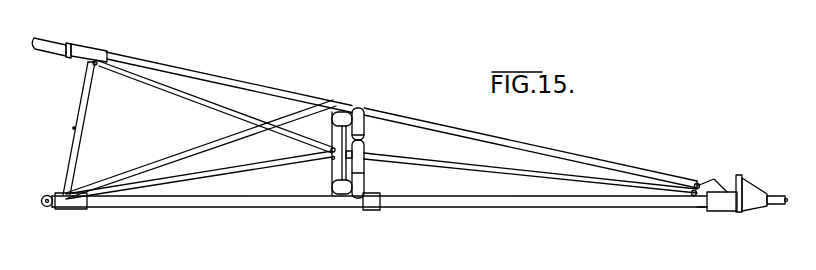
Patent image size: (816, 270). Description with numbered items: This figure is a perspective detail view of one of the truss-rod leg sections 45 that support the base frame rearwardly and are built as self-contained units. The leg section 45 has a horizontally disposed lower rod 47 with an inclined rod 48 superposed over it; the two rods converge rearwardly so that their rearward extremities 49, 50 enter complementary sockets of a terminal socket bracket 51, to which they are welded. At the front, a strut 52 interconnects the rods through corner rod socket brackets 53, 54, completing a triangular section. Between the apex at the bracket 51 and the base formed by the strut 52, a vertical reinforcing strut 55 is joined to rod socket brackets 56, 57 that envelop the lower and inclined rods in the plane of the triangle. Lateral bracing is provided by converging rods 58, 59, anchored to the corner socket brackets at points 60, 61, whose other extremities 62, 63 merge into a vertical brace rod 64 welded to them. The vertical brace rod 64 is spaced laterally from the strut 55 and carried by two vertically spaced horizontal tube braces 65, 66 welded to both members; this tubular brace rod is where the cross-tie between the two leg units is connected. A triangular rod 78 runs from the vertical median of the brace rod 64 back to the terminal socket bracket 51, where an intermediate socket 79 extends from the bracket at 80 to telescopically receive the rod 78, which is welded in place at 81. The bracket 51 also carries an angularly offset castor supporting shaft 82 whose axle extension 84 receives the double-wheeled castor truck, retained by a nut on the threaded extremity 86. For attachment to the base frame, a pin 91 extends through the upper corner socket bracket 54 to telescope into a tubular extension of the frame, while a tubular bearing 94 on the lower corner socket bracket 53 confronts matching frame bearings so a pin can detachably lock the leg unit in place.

The leg section 45 is at (258, 80).
The lower rod 47 is at (407, 198).
The inclined rod 48 is at (466, 128).
The rearward extremity of lower rod 49 is at (703, 209).
The rearward extremity of inclined rod 50 is at (712, 182).
The terminal socket bracket 51 is at (740, 177).
The strut 52 is at (82, 115).
The lower corner rod socket bracket 53 is at (76, 209).
The upper corner rod socket bracket 54 is at (82, 56).
The vertical reinforcing strut 55 is at (366, 152).
The rod socket bracket 56 is at (360, 200).
The rod socket bracket 57 is at (363, 108).
The converging rod 58 is at (242, 172).
The converging rod 59 is at (200, 102).
The anchorage of converging rod 60 is at (80, 191).
The anchorage of converging rod 61 is at (96, 66).
The extremity of converging rod 62 is at (330, 148).
The extremity of converging rod 63 is at (331, 160).
The vertical brace rod 64 is at (338, 178).
The horizontal tube brace 65 is at (346, 194).
The horizontal tube brace 66 is at (350, 114).
The triangular rod 78 is at (530, 177).
The intermediate socket 79 is at (692, 196).
The socket extension point 80 is at (722, 211).
The welded joint 81 is at (694, 184).
The castor supporting shaft 82 is at (748, 211).
The axle extension 84 is at (770, 196).
The threaded extremity 86 is at (786, 204).
The pin 91 is at (54, 42).
The tubular bearing 94 is at (45, 195).